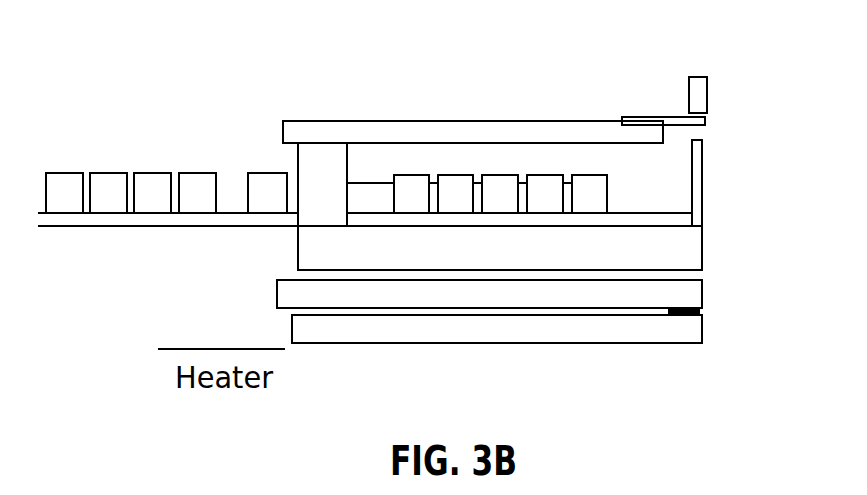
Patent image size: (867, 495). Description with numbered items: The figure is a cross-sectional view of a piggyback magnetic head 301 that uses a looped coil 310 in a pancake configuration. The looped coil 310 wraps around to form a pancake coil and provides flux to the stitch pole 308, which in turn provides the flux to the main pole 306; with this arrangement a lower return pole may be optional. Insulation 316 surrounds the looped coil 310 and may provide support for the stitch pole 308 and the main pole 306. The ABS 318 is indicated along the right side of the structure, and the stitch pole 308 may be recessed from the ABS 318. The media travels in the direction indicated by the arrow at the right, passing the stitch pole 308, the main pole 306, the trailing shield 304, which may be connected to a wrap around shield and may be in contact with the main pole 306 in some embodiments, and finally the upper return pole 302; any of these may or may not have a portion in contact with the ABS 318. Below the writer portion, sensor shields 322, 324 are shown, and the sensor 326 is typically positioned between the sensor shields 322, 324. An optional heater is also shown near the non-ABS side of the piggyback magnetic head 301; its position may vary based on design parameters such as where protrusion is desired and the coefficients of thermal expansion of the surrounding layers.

The piggyback magnetic head 301 is at (328, 50).
The upper return pole 302 is at (707, 90).
The trailing shield 304 is at (703, 190).
The main pole 306 is at (665, 118).
The stitch pole 308 is at (503, 121).
The looped coil 310 is at (584, 175).
The insulation 316 is at (560, 260).
The ABS 318 is at (712, 244).
The sensor shield 322 is at (277, 296).
The sensor shield 324 is at (292, 323).
The sensor 326 is at (688, 309).